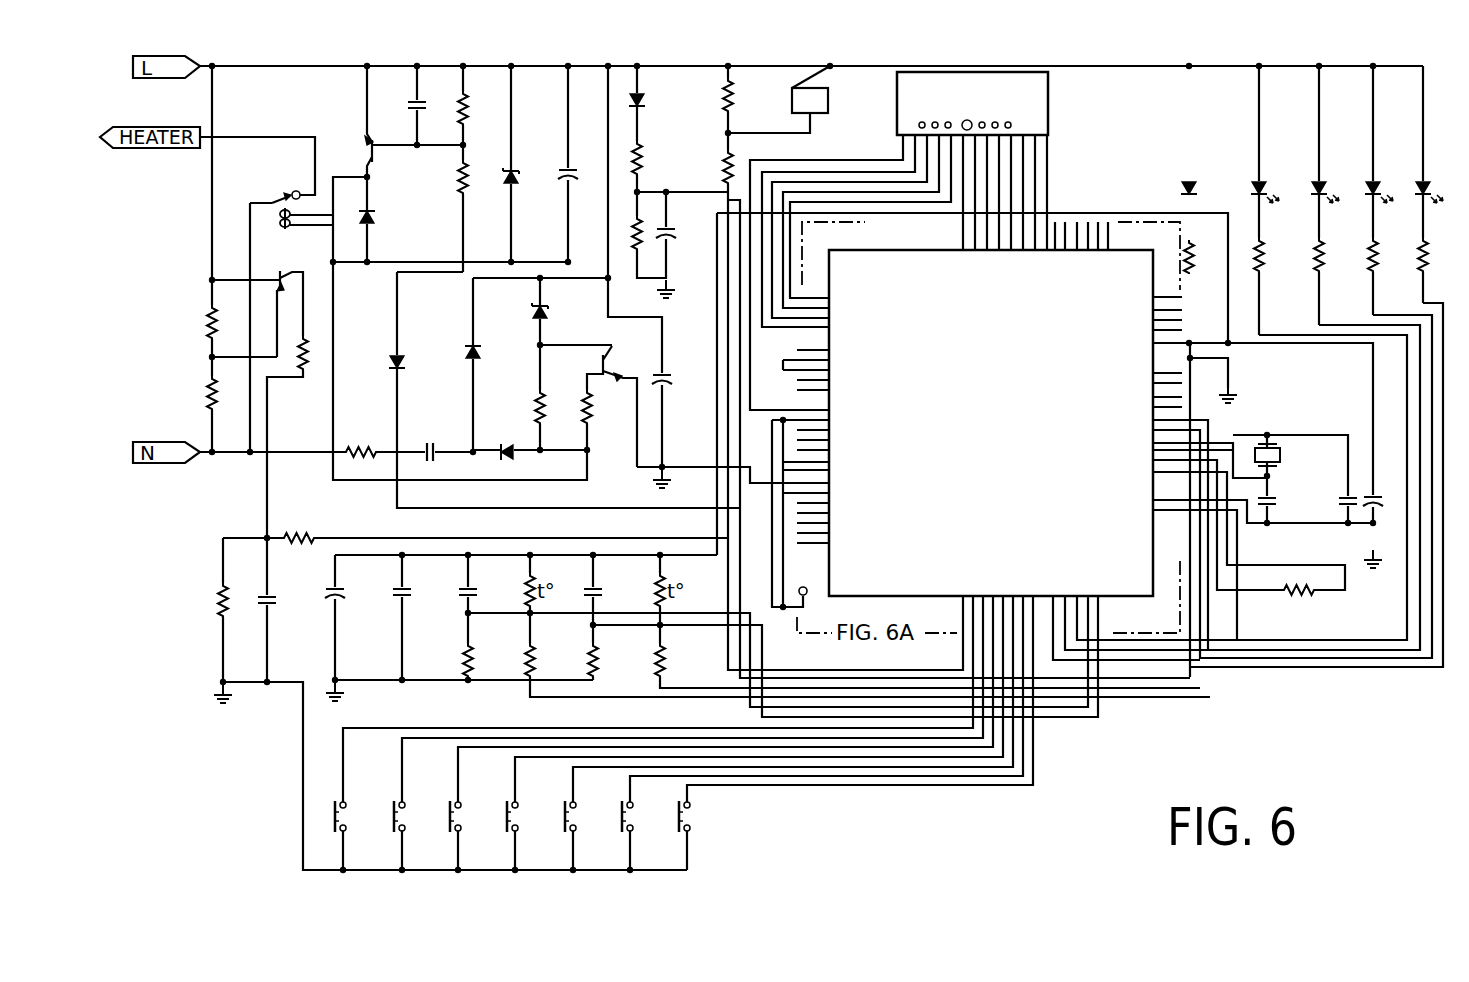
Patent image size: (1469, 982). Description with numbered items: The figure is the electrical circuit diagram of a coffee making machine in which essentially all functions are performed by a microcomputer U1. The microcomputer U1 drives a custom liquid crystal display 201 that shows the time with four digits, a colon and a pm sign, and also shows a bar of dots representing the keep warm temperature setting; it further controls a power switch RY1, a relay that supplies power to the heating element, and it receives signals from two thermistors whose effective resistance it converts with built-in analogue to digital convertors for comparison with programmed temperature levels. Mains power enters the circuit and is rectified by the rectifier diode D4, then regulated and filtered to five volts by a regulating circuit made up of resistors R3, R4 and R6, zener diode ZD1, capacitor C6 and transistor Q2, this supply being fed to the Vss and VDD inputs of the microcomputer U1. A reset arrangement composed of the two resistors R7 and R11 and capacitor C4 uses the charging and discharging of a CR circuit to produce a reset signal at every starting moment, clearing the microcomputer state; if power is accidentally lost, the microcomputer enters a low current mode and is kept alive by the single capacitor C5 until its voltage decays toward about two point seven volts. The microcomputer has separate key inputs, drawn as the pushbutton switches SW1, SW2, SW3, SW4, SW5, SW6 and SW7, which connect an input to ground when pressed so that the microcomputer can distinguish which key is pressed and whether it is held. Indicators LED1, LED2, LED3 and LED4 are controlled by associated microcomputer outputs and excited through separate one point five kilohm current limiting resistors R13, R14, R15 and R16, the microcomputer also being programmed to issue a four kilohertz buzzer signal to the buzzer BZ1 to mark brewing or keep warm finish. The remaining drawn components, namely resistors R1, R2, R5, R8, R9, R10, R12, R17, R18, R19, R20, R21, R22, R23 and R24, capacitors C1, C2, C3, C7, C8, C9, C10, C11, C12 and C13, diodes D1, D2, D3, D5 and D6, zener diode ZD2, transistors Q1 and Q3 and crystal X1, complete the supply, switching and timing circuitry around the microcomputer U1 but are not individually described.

The display 201 is at (1040, 108).
The microcomputer U1 is at (991, 423).
The resistor R1 is at (1300, 600).
The resistor R2 is at (202, 393).
The resistor R3 is at (362, 441).
The resistor R4 is at (550, 407).
The resistor R5 is at (211, 600).
The resistor R6 is at (597, 407).
The resistor R7 is at (632, 234).
The resistor R8 is at (473, 108).
The resistor R9 is at (473, 177).
The resistor R10 is at (300, 528).
The resistor R11 is at (653, 158).
The resistor R12 is at (1204, 257).
The current limiting resistor R13 is at (1274, 255).
The current limiting resistor R14 is at (1334, 255).
The current limiting resistor R15 is at (1388, 255).
The current limiting resistor R16 is at (197, 322).
The resistor R17 is at (306, 358).
The resistor R18 is at (1438, 255).
The resistor R19 is at (712, 95).
The resistor R20 is at (711, 167).
The resistor R21 is at (483, 660).
The resistor R22 is at (545, 660).
The resistor R23 is at (608, 660).
The resistor R24 is at (675, 660).
The capacitor C1 is at (1347, 523).
The capacitor C2 is at (1266, 523).
The capacitor C3 is at (579, 171).
The capacitor C4 is at (677, 230).
The capacitor C5 is at (1382, 501).
The capacitor C6 is at (673, 375).
The capacitor C7 is at (277, 601).
The capacitor C8 is at (409, 94).
The capacitor C9 is at (430, 441).
The capacitor C10 is at (349, 587).
The capacitor C11 is at (416, 593).
The capacitor C12 is at (482, 593).
The capacitor C13 is at (607, 593).
The diode D1 is at (648, 101).
The diode D2 is at (1199, 178).
The diode D3 is at (379, 220).
The rectifier diode D4 is at (510, 438).
The diode D5 is at (484, 354).
The diode D6 is at (407, 364).
The zener diode ZD1 is at (555, 312).
The zener diode ZD2 is at (525, 190).
The transistor Q1 is at (382, 140).
The transistor Q2 is at (623, 363).
The transistor Q3 is at (273, 271).
The power switch RY1 is at (281, 196).
The buzzer BZ1 is at (830, 93).
The crystal X1 is at (1280, 454).
The VDD input VDD is at (804, 579).
The indicator LED1 is at (1278, 182).
The indicator LED2 is at (1338, 182).
The indicator LED3 is at (1392, 182).
The indicator LED4 is at (1441, 182).
The switch SW1 is at (702, 816).
The switch SW2 is at (645, 816).
The switch SW3 is at (588, 816).
The switch SW4 is at (530, 816).
The switch SW5 is at (473, 816).
The switch SW6 is at (417, 816).
The switch SW7 is at (358, 816).